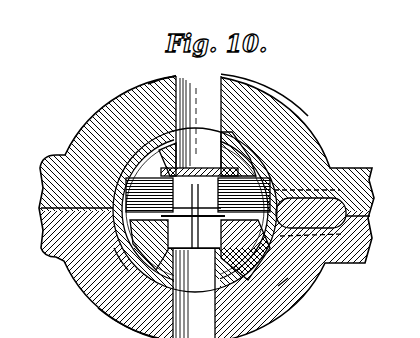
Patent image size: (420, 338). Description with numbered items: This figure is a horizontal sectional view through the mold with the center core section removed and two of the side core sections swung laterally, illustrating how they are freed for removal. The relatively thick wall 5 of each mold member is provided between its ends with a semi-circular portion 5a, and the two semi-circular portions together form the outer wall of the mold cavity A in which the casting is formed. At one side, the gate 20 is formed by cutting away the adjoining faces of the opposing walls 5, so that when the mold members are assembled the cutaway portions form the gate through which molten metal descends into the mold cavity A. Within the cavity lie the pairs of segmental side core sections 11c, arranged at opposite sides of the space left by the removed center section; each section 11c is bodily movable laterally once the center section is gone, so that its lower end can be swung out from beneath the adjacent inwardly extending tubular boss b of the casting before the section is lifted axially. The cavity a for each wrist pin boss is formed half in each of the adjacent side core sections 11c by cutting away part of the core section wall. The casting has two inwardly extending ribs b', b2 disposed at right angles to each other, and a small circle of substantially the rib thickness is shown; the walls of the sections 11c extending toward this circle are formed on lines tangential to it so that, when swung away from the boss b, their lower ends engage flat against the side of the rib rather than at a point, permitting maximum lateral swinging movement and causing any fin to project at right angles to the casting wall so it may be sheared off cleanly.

The wall 5 is at (42, 147).
The semi-circular portion 5a is at (263, 89).
The segmental side core sections 11c is at (153, 142).
The gate 20 is at (333, 162).
The inwardly extending tubular boss b is at (197, 207).
The inwardly extending rib b' is at (193, 216).
The inwardly extending rib b2 is at (195, 210).
The cavity for wrist pin boss a is at (108, 247).
The mold cavity A is at (275, 286).